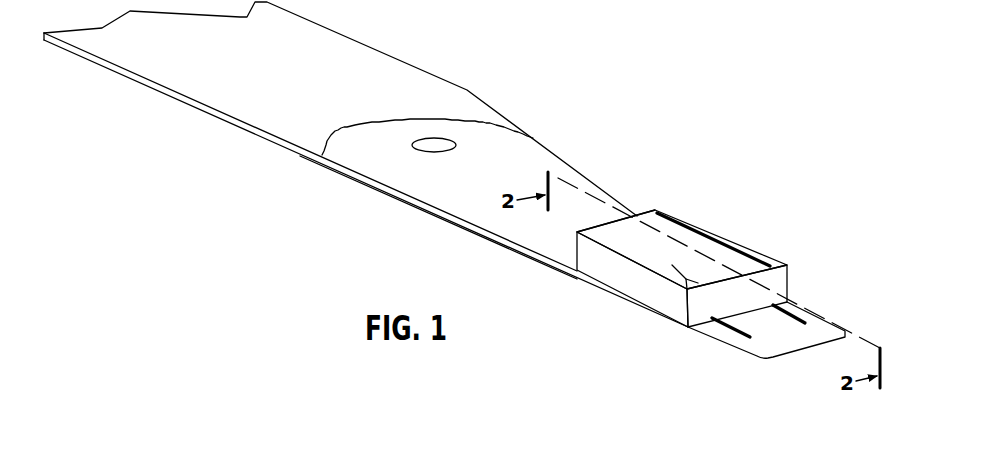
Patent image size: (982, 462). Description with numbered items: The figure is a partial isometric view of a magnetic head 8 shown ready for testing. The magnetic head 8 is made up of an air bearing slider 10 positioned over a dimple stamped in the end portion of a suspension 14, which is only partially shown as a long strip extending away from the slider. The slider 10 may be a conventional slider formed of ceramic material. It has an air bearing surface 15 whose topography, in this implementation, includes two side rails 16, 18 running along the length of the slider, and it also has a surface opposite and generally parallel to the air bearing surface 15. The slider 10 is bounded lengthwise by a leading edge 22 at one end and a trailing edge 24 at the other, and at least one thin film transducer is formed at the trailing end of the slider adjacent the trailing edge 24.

The magnetic head 8 is at (659, 199).
The air bearing slider 10 is at (745, 232).
The suspension 14 is at (263, 116).
The air bearing surface 15 is at (745, 267).
The side rail 16 is at (678, 211).
The side rail 18 is at (595, 234).
The leading edge 22 is at (709, 314).
The trailing edge 24 is at (573, 262).